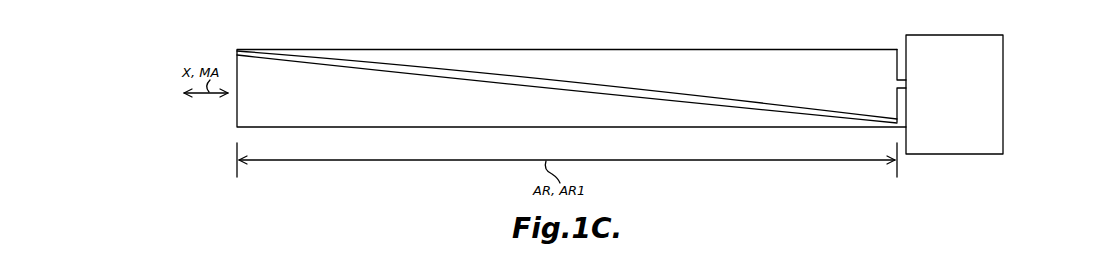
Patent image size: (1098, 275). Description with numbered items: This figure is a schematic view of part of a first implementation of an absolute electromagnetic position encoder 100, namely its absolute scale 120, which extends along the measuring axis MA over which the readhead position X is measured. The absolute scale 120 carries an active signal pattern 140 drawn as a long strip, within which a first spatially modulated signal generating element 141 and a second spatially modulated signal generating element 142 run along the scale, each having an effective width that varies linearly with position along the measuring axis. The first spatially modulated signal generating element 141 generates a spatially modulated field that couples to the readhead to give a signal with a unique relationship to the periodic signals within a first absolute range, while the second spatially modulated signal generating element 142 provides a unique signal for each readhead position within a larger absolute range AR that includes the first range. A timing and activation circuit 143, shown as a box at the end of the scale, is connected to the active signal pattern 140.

The absolute electromagnetic position encoder 100 is at (893, 22).
The absolute scale 120 is at (1008, 90).
The active signal pattern 140 is at (567, 66).
The first spatially modulated signal generating element 141 is at (307, 50).
The second spatially modulated signal generating element 142 is at (250, 50).
The timing and activation circuit 143 is at (927, 154).